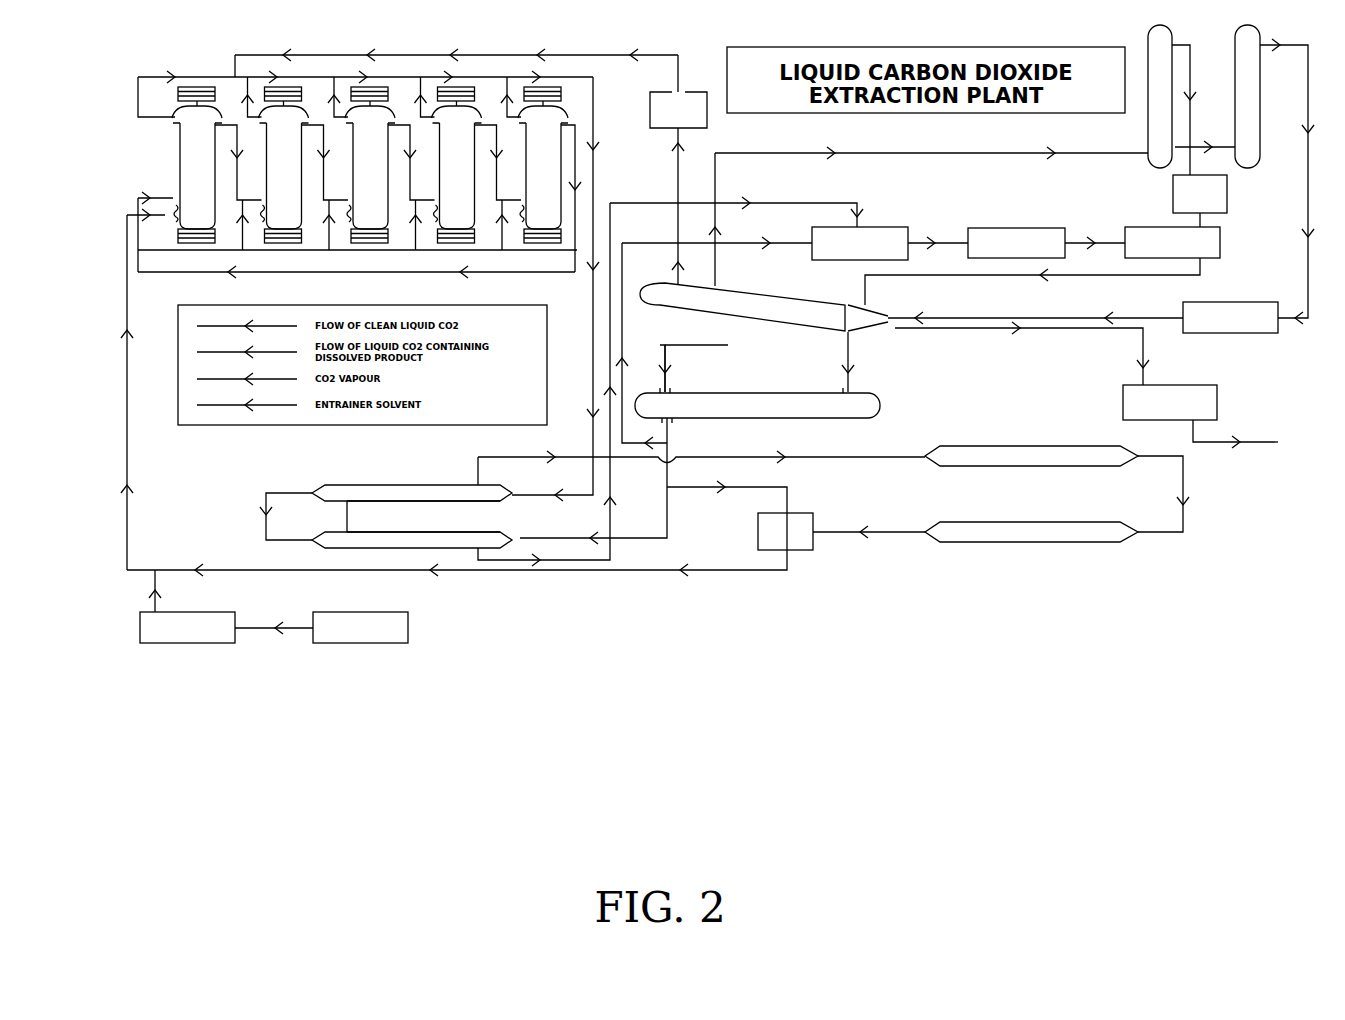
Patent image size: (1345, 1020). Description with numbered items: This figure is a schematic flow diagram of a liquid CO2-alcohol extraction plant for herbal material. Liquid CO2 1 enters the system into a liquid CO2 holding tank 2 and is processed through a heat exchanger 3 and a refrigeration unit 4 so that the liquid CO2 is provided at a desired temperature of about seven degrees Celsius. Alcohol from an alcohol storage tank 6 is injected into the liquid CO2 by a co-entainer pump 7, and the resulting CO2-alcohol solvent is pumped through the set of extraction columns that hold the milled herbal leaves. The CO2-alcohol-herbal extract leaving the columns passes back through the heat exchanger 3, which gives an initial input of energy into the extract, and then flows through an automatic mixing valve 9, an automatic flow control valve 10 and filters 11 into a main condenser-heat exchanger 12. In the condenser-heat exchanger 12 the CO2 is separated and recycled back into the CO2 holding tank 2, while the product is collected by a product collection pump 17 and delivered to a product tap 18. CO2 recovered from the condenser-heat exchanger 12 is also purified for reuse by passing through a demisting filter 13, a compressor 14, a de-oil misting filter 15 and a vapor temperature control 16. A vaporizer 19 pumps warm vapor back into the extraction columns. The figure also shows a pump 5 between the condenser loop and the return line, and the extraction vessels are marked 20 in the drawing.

The liquid CO2 1 is at (708, 366).
The liquid CO2 holding tank 2 is at (757, 415).
The heat exchanger 3 is at (412, 516).
The refrigeration unit 4 is at (1031, 494).
The pump 5 is at (796, 543).
The alcohol storage tank 6 is at (360, 641).
The co-entainer pump 7 is at (187, 641).
The automatic mixing valve 9 is at (865, 230).
The automatic flow control valve 10 is at (1016, 229).
The filters 11 is at (1188, 242).
The main condenser-heat exchanger 12 is at (764, 301).
The demisting filter 13 is at (1141, 102).
The compressor 14 is at (1217, 194).
The de-oil misting filter 15 is at (1265, 96).
The vapor temperature control 16 is at (1230, 331).
The product collection pump 17 is at (1153, 402).
The product tap 18 is at (1290, 442).
The vaporizer 19 is at (660, 110).
The extraction vessel 20 is at (370, 165).